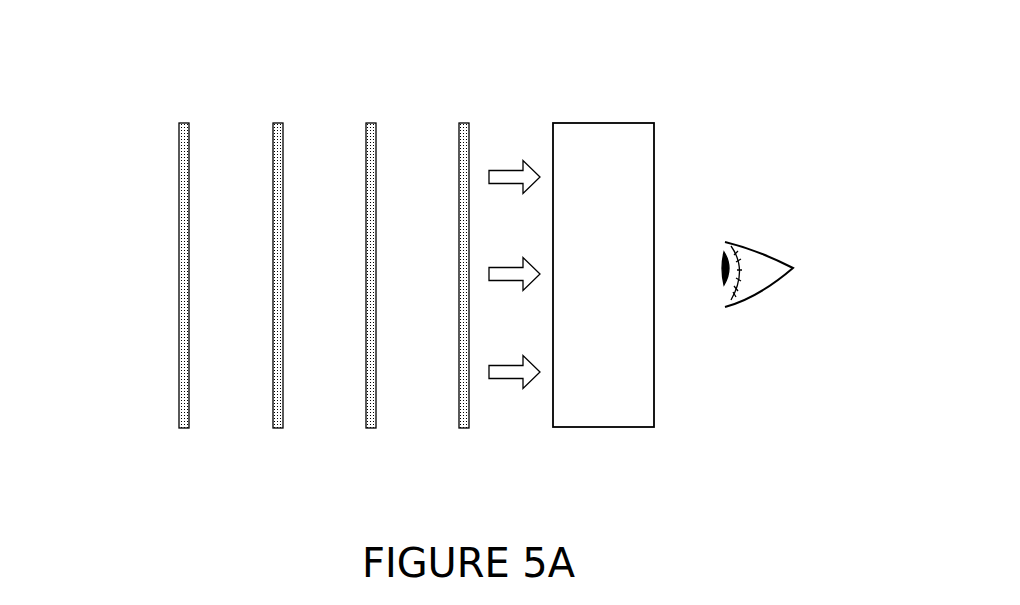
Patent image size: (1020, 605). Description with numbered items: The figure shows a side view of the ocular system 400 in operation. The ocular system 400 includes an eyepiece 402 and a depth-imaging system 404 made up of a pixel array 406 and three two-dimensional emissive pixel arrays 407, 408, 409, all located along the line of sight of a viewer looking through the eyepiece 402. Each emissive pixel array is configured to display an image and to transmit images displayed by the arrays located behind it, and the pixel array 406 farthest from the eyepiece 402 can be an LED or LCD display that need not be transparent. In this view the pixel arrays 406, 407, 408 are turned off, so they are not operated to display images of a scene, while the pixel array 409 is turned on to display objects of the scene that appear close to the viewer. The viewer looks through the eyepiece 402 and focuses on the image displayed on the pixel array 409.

The ocular system 400 is at (664, 60).
The eyepiece 402 is at (625, 325).
The depth-imaging system 404 is at (427, 80).
The pixel array 406 is at (180, 407).
The emissive pixel array 407 is at (273, 407).
The emissive pixel array 408 is at (366, 407).
The emissive pixel array 409 is at (459, 407).